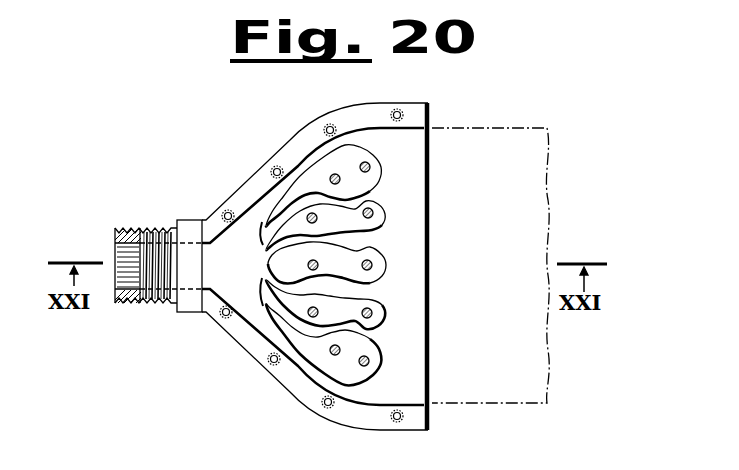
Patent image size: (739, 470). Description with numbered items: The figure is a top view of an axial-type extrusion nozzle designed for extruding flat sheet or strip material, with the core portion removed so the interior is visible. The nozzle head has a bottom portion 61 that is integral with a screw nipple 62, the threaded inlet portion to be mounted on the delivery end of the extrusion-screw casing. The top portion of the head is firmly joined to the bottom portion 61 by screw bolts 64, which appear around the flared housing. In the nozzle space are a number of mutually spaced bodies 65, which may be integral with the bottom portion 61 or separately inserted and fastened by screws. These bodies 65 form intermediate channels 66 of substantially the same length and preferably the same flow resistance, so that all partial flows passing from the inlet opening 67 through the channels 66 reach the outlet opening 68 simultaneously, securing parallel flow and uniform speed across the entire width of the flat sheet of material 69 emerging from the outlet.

The bottom portion 61 is at (293, 143).
The screw nipple 62 is at (129, 227).
The screw bolts 64 is at (376, 226).
The mutually spaced bodies 65 is at (373, 208).
The intermediate channels 66 is at (345, 143).
The inlet opening 67 is at (121, 258).
The outlet opening 68 is at (426, 253).
The flat sheet of material 69 is at (490, 405).